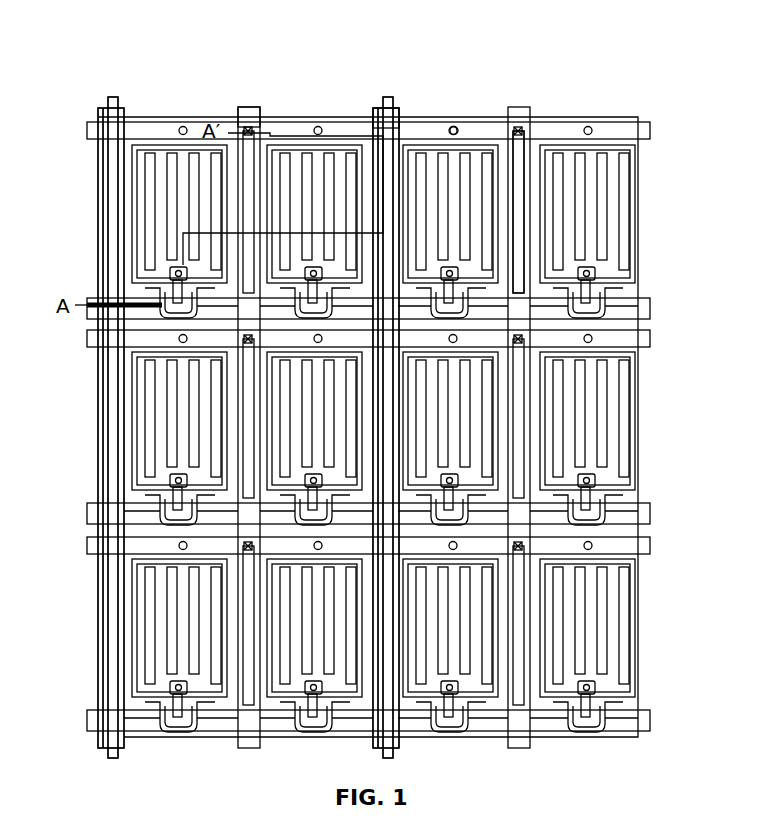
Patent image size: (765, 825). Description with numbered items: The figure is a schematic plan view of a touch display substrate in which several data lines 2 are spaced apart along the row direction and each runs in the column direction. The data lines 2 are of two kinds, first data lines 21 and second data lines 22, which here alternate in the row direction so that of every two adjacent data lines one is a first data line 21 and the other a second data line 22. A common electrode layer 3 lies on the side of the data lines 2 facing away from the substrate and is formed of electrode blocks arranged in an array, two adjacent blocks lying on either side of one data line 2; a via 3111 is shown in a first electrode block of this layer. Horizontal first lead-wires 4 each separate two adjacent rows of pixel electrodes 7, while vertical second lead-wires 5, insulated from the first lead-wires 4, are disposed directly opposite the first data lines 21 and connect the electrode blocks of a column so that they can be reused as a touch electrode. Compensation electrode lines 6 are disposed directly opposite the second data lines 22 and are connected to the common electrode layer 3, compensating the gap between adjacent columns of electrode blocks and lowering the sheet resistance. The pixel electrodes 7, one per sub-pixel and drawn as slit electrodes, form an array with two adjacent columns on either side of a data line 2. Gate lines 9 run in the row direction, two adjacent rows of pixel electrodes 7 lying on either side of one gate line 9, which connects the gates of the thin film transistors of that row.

The data line 2 is at (347, 55).
The common electrode layer 3 is at (600, 120).
The via 3111 is at (455, 126).
The first lead-wire 4 is at (87, 130).
The second lead-wire 5 is at (119, 100).
The compensation electrode line 6 is at (521, 190).
The pixel electrode 7 is at (475, 150).
The gate line 9 is at (650, 306).
The first data line 21 is at (101, 107).
The second data line 22 is at (247, 107).